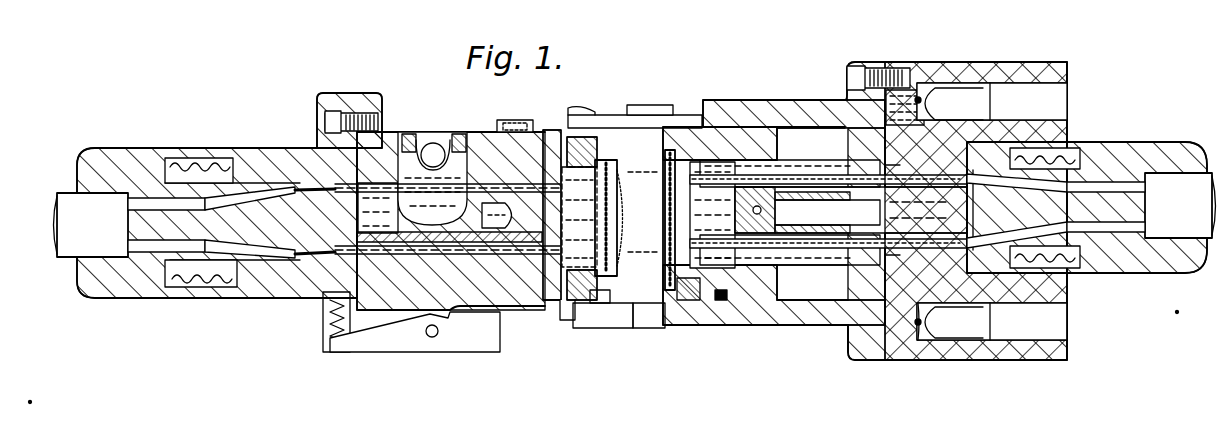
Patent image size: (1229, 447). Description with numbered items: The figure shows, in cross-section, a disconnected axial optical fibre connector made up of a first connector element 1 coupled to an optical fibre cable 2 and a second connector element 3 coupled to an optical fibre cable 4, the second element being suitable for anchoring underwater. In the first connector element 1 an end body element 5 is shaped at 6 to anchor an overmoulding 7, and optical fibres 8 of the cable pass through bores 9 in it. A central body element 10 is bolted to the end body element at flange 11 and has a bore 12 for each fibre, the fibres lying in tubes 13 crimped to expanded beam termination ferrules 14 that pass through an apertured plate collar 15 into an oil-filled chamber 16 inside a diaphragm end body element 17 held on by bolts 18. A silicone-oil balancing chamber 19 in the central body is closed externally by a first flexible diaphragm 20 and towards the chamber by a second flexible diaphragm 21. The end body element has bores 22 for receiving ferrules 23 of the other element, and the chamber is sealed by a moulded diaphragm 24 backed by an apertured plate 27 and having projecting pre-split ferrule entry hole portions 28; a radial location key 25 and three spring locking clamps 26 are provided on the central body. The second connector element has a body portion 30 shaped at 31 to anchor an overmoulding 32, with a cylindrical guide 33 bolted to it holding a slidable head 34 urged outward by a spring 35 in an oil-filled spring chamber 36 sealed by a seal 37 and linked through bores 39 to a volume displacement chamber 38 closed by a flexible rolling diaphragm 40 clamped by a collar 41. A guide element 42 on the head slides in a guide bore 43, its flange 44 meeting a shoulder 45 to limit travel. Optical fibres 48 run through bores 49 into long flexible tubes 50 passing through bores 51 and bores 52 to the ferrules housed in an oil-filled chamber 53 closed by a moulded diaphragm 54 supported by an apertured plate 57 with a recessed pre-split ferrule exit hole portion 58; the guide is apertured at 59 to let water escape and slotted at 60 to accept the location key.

The first connector element 1 is at (272, 340).
The optical fibre cable 2 is at (113, 205).
The second connector element 3 is at (838, 72).
The optical fibre cable 4 is at (1155, 195).
The end body element 5 is at (262, 288).
The anchor shaping 6 is at (192, 272).
The overmoulding 7 is at (97, 300).
The optical fibres 8 is at (292, 250).
The bores 9 is at (302, 188).
The central body element 10 is at (490, 300).
The flange 11 is at (368, 100).
The bore 12 is at (528, 132).
The tubes 13 is at (508, 200).
The expanded beam termination ferrules 14 is at (538, 290).
The apertured plate collar 15 is at (550, 305).
The chamber 16 is at (588, 303).
The diaphragm end body element 17 is at (600, 312).
The bolts 18 is at (565, 300).
The balancing chamber 19 is at (383, 210).
The first flexible diaphragm 20 is at (440, 160).
The second flexible diaphragm 21 is at (452, 168).
The bore 22 is at (578, 155).
The expanded beam termination ferrules 23 is at (738, 112).
The moulded diaphragm 24 is at (672, 300).
The radial location key 25 is at (550, 150).
The spring locking clamps 26 is at (345, 350).
The apertured plate 27 is at (612, 272).
The pre-split ferrule entry hole portions 28 is at (665, 262).
The body portion 30 is at (905, 72).
The anchor shaping 31 is at (1075, 150).
The overmoulding 32 is at (1085, 172).
The cylindrical guide 33 is at (802, 326).
The slidable head 34 is at (714, 320).
The spring 35 is at (870, 300).
The spring chamber 36 is at (836, 340).
The seal 37 is at (745, 308).
The volume displacement chamber 38 is at (935, 92).
The bores 39 is at (920, 350).
The flexible rolling diaphragm 40 is at (966, 348).
The collar 41 is at (1052, 358).
The guide element 42 is at (792, 186).
The guide bore 43 is at (990, 104).
The flange 44 is at (992, 101).
The shoulder 45 is at (828, 108).
The optical fibres 48 is at (1018, 316).
The bores 49 is at (990, 322).
The long flexible tubes 50 is at (992, 321).
The bores 51 is at (900, 300).
The bores 52 is at (762, 325).
The chamber 53 is at (700, 322).
The moulded diaphragm 54 is at (633, 157).
The apertured plate 57 is at (700, 173).
The pre-split ferrule exit hole portion 58 is at (656, 220).
The apertures 59 is at (640, 300).
The slot 60 is at (612, 112).